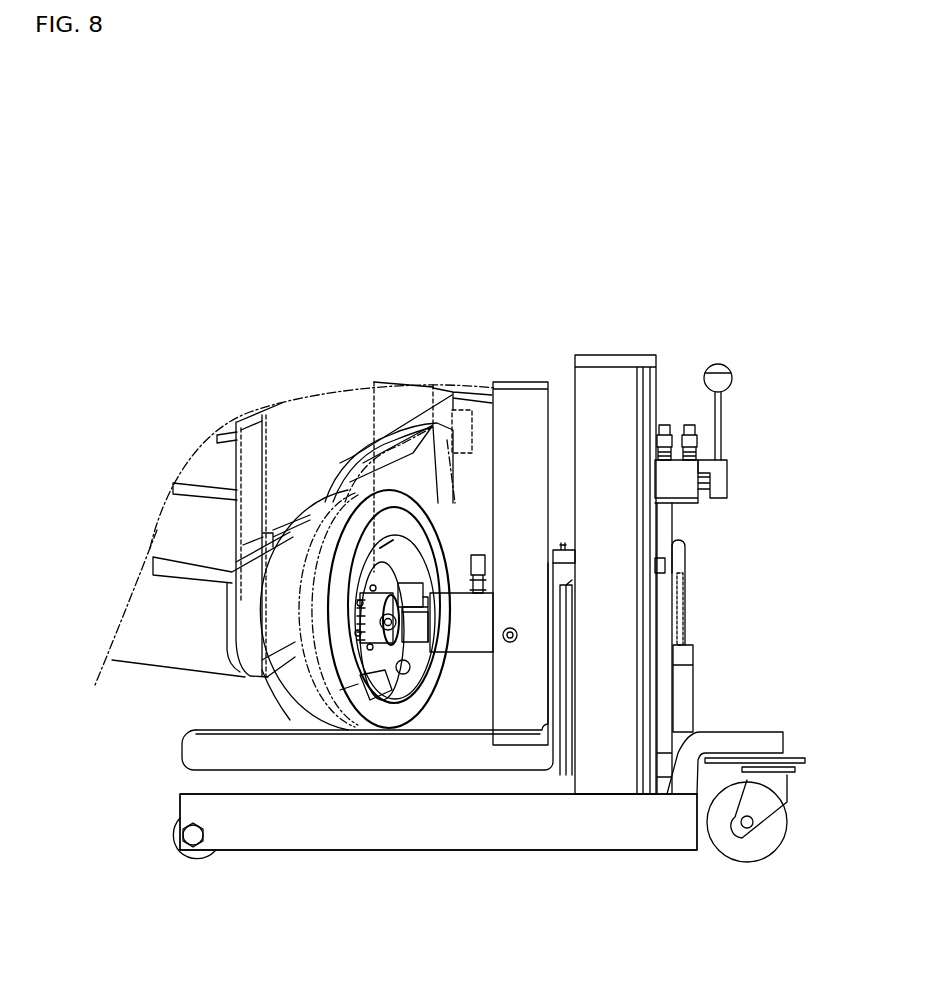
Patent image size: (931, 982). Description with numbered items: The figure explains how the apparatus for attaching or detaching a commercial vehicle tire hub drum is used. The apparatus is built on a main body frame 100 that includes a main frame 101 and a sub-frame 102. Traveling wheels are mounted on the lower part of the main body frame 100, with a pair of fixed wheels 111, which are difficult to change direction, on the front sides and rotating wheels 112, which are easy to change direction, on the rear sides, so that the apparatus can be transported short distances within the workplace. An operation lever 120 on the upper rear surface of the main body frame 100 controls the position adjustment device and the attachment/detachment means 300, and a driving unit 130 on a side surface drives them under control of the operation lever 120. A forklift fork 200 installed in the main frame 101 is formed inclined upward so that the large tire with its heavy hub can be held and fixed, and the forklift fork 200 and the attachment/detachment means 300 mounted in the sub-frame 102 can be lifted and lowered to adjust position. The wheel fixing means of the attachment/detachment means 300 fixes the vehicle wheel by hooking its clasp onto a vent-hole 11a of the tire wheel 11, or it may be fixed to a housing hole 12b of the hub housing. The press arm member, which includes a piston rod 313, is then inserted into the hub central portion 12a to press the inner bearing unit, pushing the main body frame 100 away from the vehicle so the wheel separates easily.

The tire wheel 11 is at (362, 582).
The vent-hole 11a is at (403, 583).
The hub central portion 12a is at (413, 627).
The housing hole 12b is at (395, 638).
The piston rod 313 is at (395, 645).
The forklift fork 200 is at (440, 758).
The attachment/detachment means 300 is at (462, 640).
The main body frame 100 is at (622, 283).
The main frame 101 is at (603, 385).
The sub-frame 102 is at (510, 400).
The fixed wheels 111 is at (195, 855).
The rotating wheels 112 is at (737, 848).
The operation lever 120 is at (720, 415).
The driving unit 130 is at (687, 625).